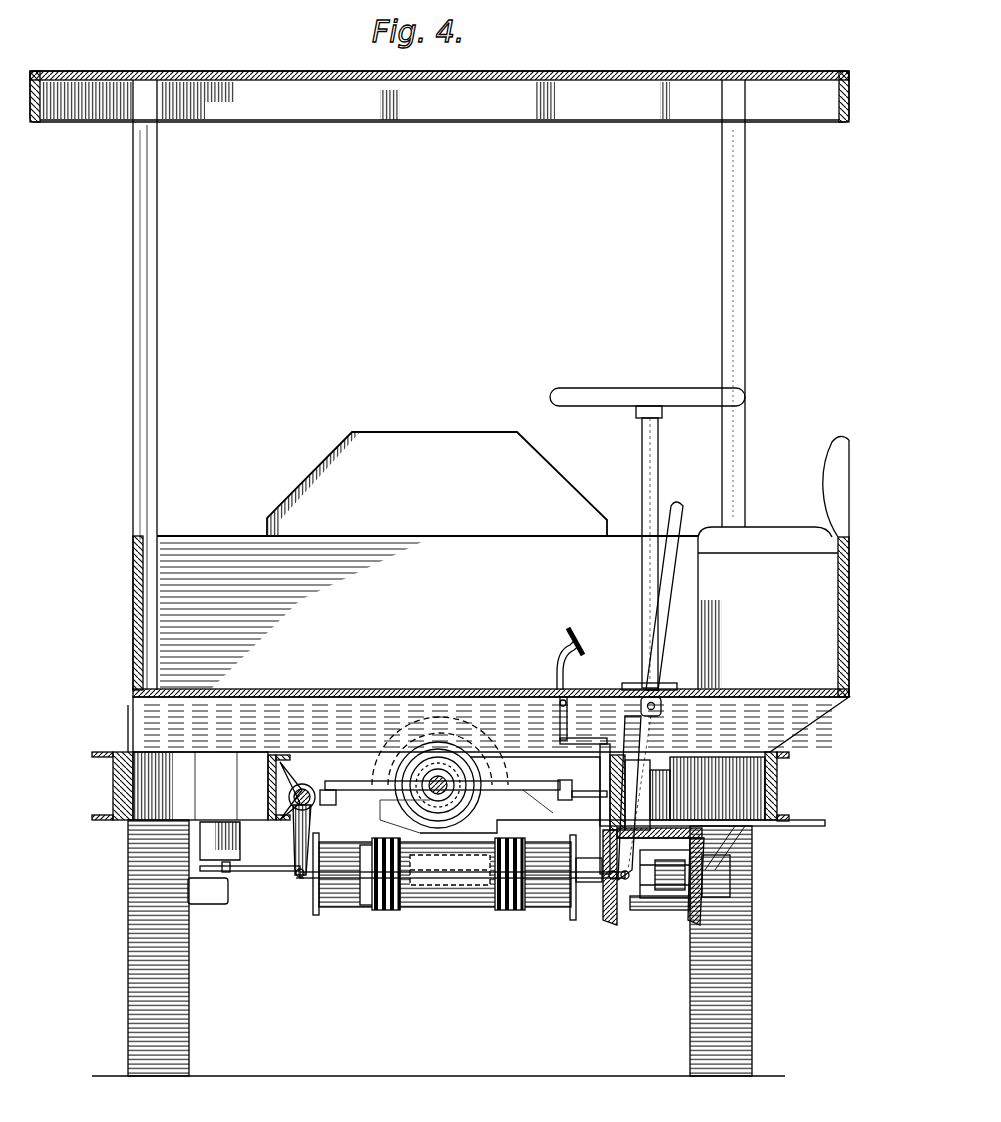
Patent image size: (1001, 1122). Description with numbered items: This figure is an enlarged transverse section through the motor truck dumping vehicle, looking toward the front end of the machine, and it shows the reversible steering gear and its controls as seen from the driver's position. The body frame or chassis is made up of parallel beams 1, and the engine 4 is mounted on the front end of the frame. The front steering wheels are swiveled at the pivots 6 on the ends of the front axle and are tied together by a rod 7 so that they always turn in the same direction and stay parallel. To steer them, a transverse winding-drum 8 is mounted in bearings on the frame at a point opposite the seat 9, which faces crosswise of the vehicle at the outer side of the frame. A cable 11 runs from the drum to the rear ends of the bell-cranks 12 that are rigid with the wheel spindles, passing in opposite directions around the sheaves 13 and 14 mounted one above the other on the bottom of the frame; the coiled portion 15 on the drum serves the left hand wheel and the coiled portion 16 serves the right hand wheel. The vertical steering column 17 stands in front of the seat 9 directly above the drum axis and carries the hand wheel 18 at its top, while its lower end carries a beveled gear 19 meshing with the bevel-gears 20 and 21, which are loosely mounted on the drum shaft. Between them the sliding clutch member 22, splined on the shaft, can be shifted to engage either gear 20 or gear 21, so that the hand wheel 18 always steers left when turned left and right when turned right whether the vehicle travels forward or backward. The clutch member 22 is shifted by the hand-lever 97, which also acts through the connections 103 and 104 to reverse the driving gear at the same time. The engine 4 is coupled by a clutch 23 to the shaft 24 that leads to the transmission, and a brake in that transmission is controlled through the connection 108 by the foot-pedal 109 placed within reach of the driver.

The parallel beams 1 is at (268, 779).
The engine 4 is at (385, 770).
The pivot 6 is at (220, 841).
The rod 7 is at (265, 871).
The winding-drum 8 is at (553, 910).
The seat 9 is at (772, 538).
The cable 11 is at (490, 910).
The bell-cranks 12 is at (222, 870).
The sheave 13 is at (405, 912).
The sheave 14 is at (443, 910).
The coiled portion 15 is at (370, 912).
The coiled portion 16 is at (506, 912).
The steering column 17 is at (642, 452).
The hand wheel 18 is at (597, 392).
The beveled gear 19 is at (718, 786).
The bevel-gear 20 is at (610, 926).
The bevel-gear 21 is at (690, 910).
The sliding clutch member 22 is at (655, 900).
The clutch 23 is at (447, 778).
The shaft 24 is at (466, 783).
The hand-lever 97 is at (668, 580).
The connection 103 is at (306, 795).
The connection 104 is at (346, 882).
The connection 108 is at (570, 779).
The foot-pedal 109 is at (580, 633).